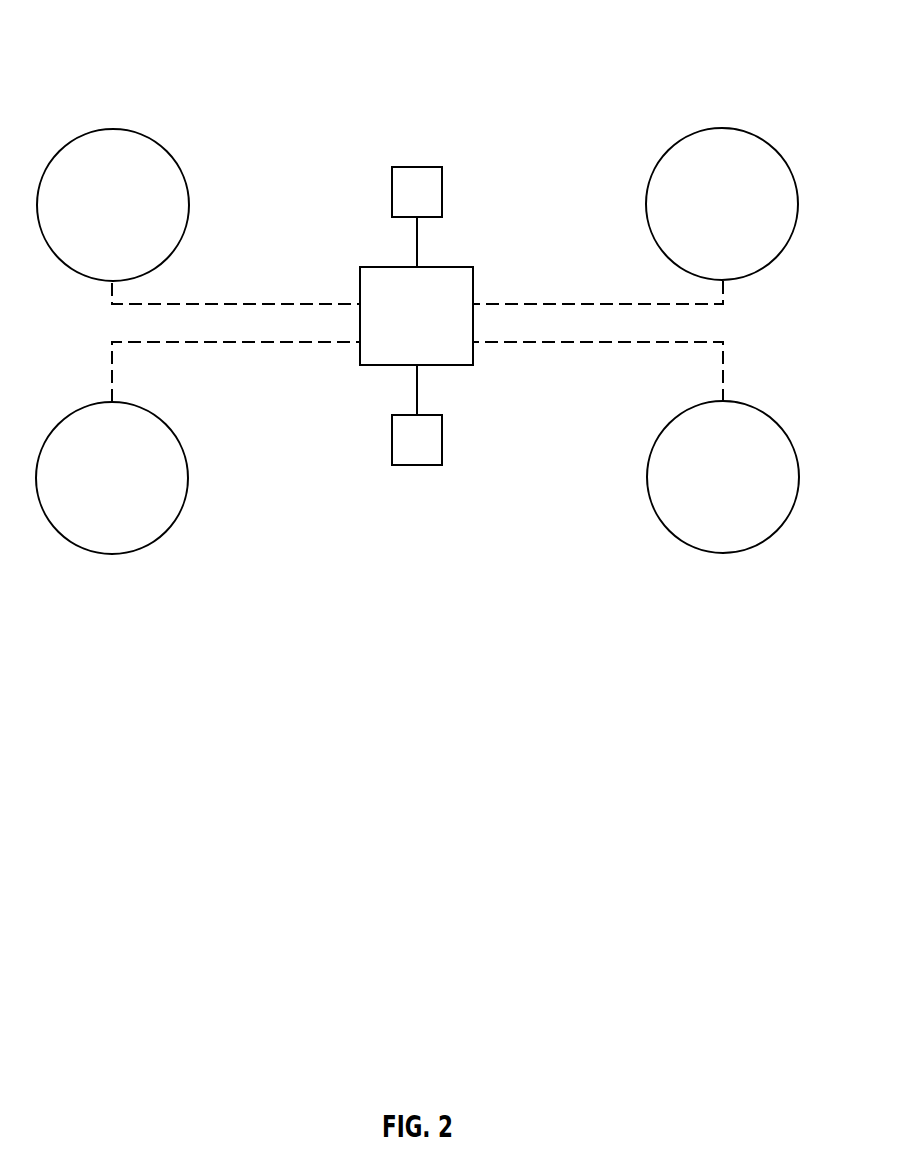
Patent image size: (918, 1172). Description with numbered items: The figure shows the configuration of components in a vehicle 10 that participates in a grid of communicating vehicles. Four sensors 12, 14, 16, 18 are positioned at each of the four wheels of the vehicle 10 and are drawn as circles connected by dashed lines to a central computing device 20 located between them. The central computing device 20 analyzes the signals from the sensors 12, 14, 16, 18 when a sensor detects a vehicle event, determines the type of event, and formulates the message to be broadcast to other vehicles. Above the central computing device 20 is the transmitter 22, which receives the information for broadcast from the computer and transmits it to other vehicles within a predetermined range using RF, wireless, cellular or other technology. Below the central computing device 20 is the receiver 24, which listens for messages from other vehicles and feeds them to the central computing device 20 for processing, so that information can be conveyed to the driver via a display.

The vehicle 10 is at (484, 33).
The sensor 12 is at (113, 181).
The sensor 14 is at (116, 504).
The sensor 16 is at (722, 180).
The sensor 18 is at (712, 503).
The central computing device 20 is at (417, 336).
The transmitter 22 is at (432, 199).
The receiver 24 is at (432, 437).